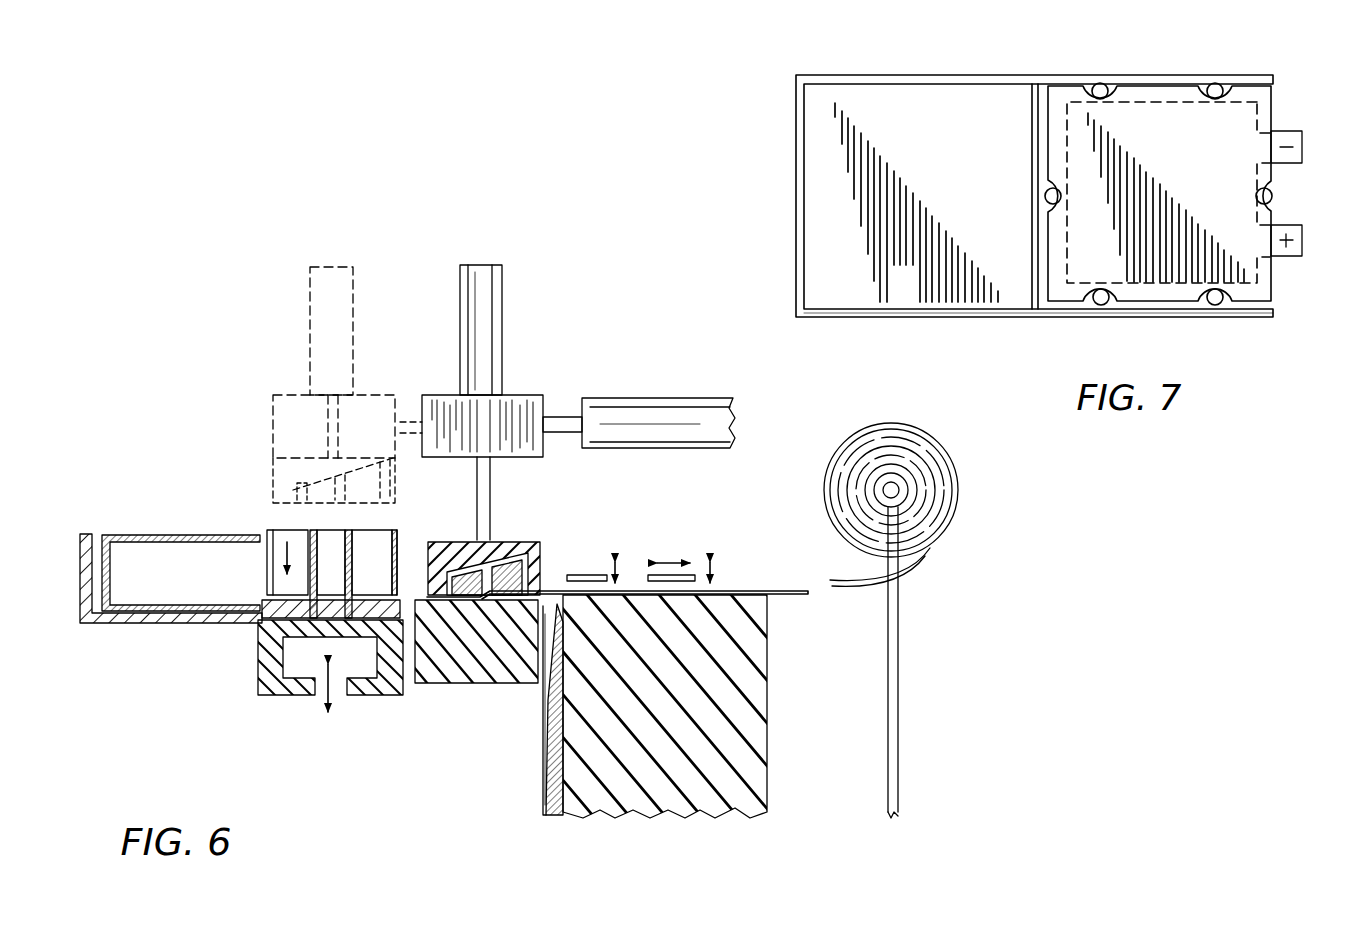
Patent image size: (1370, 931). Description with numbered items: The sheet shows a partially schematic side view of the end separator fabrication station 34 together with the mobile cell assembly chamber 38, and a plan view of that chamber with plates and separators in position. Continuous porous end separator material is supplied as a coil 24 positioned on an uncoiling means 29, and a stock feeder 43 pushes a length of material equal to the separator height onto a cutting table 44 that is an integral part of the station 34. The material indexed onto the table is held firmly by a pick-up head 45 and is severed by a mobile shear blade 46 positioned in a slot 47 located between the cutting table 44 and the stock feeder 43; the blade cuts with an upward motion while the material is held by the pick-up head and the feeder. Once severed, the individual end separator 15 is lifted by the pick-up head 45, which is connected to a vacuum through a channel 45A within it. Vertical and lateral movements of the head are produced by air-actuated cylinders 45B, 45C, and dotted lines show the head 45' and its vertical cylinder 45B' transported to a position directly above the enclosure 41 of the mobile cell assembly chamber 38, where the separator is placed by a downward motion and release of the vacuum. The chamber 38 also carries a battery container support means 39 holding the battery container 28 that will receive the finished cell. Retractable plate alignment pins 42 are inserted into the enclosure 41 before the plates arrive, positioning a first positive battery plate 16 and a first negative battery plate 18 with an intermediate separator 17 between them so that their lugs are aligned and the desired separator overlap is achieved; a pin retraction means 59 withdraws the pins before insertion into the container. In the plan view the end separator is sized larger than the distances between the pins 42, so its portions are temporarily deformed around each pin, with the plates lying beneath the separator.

In FIG. 6, the end separator 15 is at (376, 588).
In FIG. 6, the first positive battery plate 16 is at (334, 588).
In FIG. 7, the first positive battery plate 16 is at (1302, 239).
In FIG. 6, the intermediate separator 17 is at (283, 495).
In FIG. 7, the intermediate separator 17 is at (1268, 113).
In FIG. 7, the first negative battery plate 18 is at (1302, 146).
In FIG. 6, the coil of end separator material 24 is at (907, 452).
In FIG. 6, the battery container 28 is at (143, 534).
In FIG. 7, the battery container 28 is at (950, 96).
In FIG. 6, the uncoiling means 29 is at (905, 485).
In FIG. 6, the end separator fabrication station 34 is at (647, 800).
In FIG. 6, the mobile cell assembly chamber 38 is at (222, 624).
In FIG. 7, the mobile cell assembly chamber 38 is at (1028, 318).
In FIG. 6, the battery container support means 39 is at (132, 622).
In FIG. 7, the battery container support means 39 is at (895, 72).
In FIG. 6, the enclosure 41 is at (277, 540).
In FIG. 7, the enclosure 41 is at (1041, 88).
In FIG. 6, the retractable plate alignment pins 42 is at (313, 540).
In FIG. 7, the retractable plate alignment pins 42 is at (1102, 85).
In FIG. 6, the stock feeder 43 is at (587, 572).
In FIG. 6, the cutting table 44 is at (467, 673).
In FIG. 6, the pick-up head 45 is at (475, 545).
In FIG. 6, the channel 45A is at (540, 545).
In FIG. 6, the air-actuated cylinder 45B is at (503, 402).
In FIG. 6, the air-actuated cylinder in transported position 45B' is at (289, 331).
In FIG. 6, the air-actuated cylinder 45C is at (657, 405).
In FIG. 6, the pick-up head in transported position 45' is at (316, 449).
In FIG. 6, the mobile shear blade 46 is at (548, 747).
In FIG. 6, the slot 47 is at (547, 630).
In FIG. 6, the pin retraction means 59 is at (267, 693).